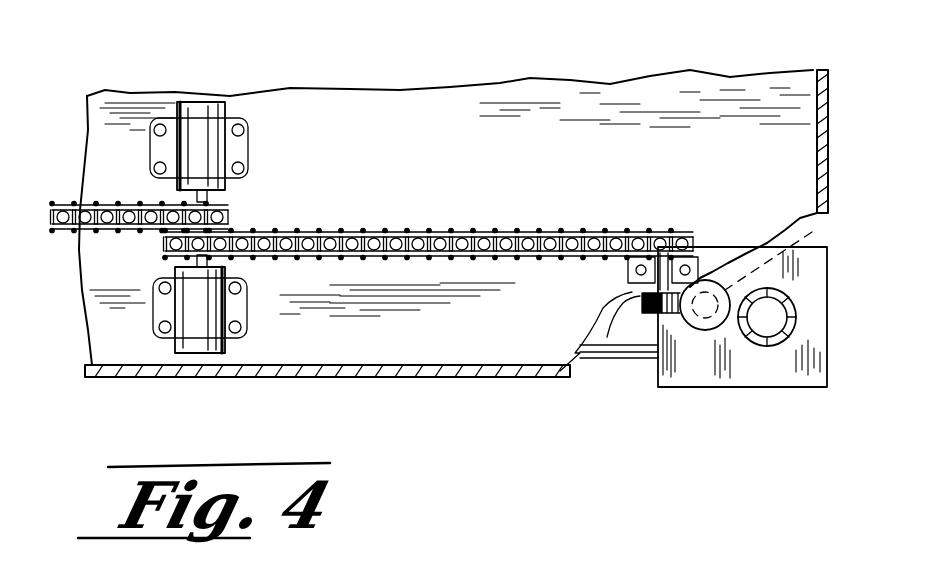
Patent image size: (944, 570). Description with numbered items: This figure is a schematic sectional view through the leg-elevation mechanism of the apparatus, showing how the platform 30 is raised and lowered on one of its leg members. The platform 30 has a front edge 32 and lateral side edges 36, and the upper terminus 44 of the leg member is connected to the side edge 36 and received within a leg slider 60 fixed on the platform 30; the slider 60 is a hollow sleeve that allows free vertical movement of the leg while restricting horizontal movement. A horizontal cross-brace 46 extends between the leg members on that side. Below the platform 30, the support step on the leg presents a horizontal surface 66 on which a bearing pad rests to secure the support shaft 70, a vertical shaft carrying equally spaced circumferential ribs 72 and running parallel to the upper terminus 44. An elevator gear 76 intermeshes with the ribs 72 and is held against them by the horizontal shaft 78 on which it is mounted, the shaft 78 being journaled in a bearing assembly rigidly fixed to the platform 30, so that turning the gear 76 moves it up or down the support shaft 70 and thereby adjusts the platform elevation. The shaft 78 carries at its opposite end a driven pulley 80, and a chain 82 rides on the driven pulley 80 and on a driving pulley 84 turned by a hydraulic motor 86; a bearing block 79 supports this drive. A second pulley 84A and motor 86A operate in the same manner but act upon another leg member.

The platform 30 is at (376, 153).
The front edge 32 is at (832, 125).
The lateral side edges 36 is at (498, 377).
The upper terminus 44 is at (773, 317).
The horizontal cross-brace 46 is at (607, 335).
The leg slider 60 is at (793, 300).
The horizontal surface 66 is at (813, 270).
The support shaft 70 is at (700, 330).
The circumferential ribs 72 is at (812, 232).
The elevator gear 76 is at (648, 314).
The horizontal shaft 78 is at (640, 300).
The bearing block 79 is at (700, 263).
The driven gear or pulley 80 is at (657, 230).
The chain 82 is at (443, 230).
The driving gear or pulley 84 is at (173, 247).
The pulley 84A is at (237, 217).
The motor 86 is at (200, 333).
The motor 86A is at (200, 117).